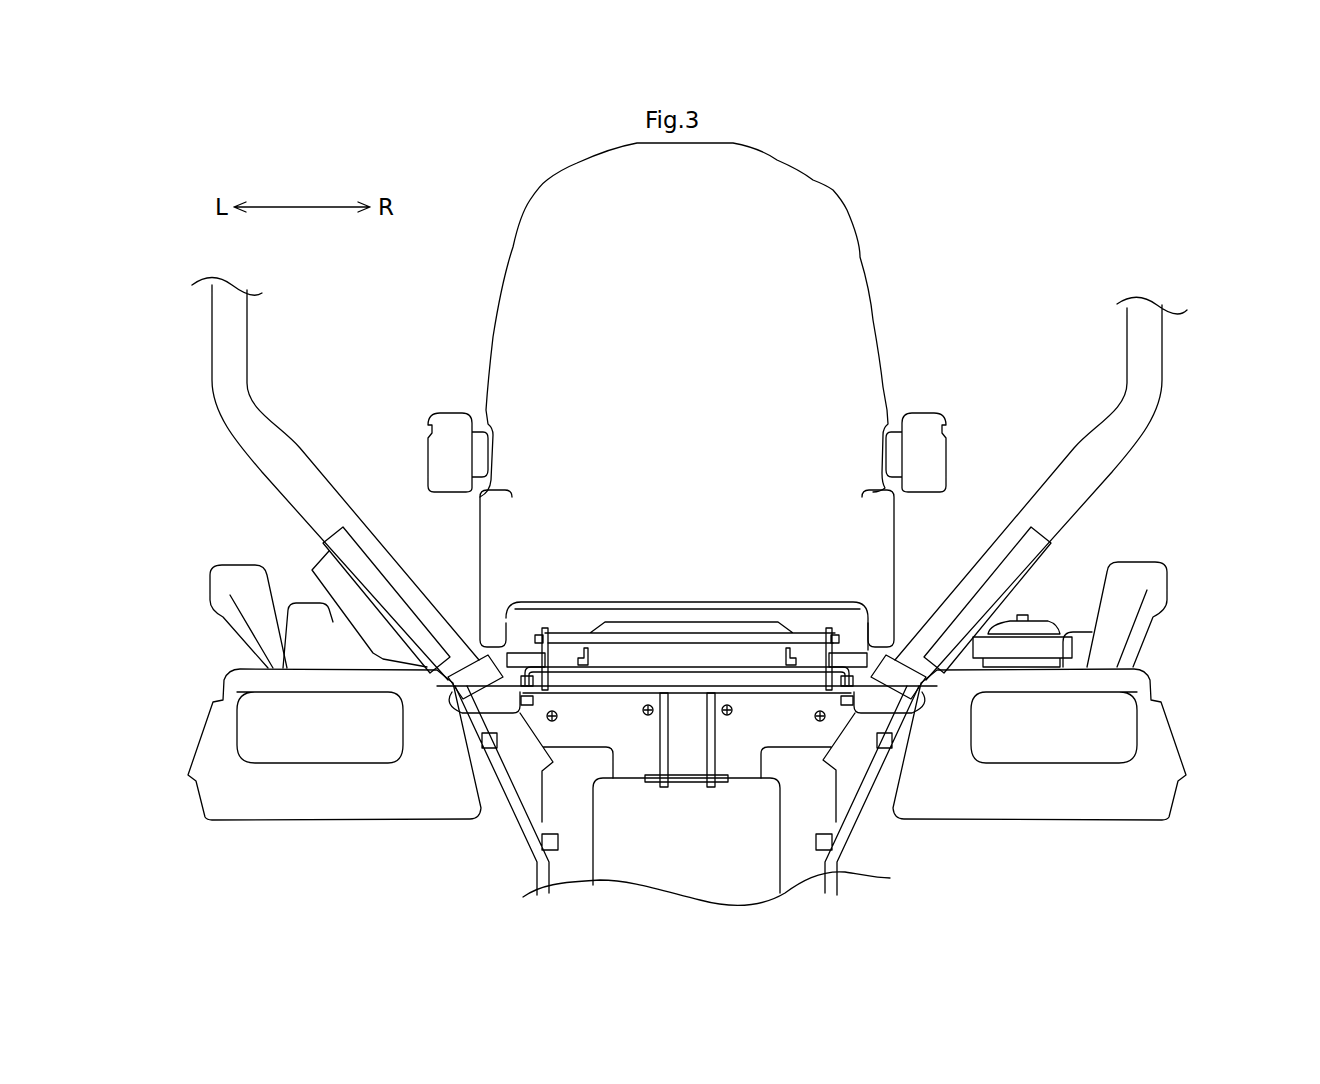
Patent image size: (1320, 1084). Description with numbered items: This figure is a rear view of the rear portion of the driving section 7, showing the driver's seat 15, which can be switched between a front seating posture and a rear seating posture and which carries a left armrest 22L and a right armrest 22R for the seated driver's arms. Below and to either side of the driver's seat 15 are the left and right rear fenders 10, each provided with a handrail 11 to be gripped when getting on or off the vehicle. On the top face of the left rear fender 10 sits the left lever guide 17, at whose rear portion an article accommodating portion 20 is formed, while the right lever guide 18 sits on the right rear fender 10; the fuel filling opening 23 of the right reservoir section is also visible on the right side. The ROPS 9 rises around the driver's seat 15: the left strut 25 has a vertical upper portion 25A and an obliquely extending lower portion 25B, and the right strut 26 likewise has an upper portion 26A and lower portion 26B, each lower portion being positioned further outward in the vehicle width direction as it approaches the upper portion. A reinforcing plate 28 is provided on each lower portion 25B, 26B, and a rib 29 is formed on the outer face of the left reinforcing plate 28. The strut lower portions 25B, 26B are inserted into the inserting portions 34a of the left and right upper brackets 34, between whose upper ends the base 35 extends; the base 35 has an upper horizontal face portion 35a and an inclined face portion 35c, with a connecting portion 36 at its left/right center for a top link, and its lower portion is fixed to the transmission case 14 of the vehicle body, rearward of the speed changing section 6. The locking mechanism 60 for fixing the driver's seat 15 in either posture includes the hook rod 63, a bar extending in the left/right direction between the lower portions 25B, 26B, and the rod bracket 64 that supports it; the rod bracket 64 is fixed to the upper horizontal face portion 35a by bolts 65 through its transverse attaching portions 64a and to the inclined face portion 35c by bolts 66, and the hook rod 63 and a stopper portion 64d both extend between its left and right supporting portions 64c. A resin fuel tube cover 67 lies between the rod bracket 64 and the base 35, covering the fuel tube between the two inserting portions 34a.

The speed changing section 6 is at (736, 882).
The driving section 7 is at (1044, 232).
The ROPS 9 is at (217, 447).
The rear fender 10 is at (206, 792).
The handrail 11 is at (237, 582).
The transmission case 14 is at (858, 876).
The driver's seat 15 is at (852, 250).
The left lever guide 17 is at (279, 589).
The right lever guide 18 is at (1070, 632).
The article accommodating portion 20 is at (305, 608).
The left armrest 22L is at (440, 428).
The right armrest 22R is at (935, 425).
The fuel filling opening 23 is at (1005, 615).
The left strut 25 is at (335, 479).
The upper portion of left strut 25A is at (243, 325).
The lower portion of left strut 25B is at (300, 465).
The right strut 26 is at (1088, 488).
The upper portion of right strut 26A is at (1152, 336).
The lower portion of right strut 26B is at (1112, 458).
The reinforcing plate 28 is at (388, 585).
The rib 29 is at (365, 632).
The upper bracket 34 is at (520, 830).
The inserting portion 34a is at (466, 672).
The base 35 is at (888, 763).
The upper horizontal face portion 35a is at (452, 690).
The inclined face portion 35c is at (744, 768).
The connecting portion 36 is at (713, 788).
The locking mechanism 60 is at (690, 581).
The hook rod 63 is at (683, 643).
The rod bracket 64 is at (605, 610).
The transverse attaching portion 64a is at (535, 694).
The supporting portion 64c is at (545, 640).
The stopper portion 64d is at (752, 622).
The bolt 65 is at (535, 688).
The bolt 66 is at (722, 715).
The fuel tube cover 67 is at (643, 683).